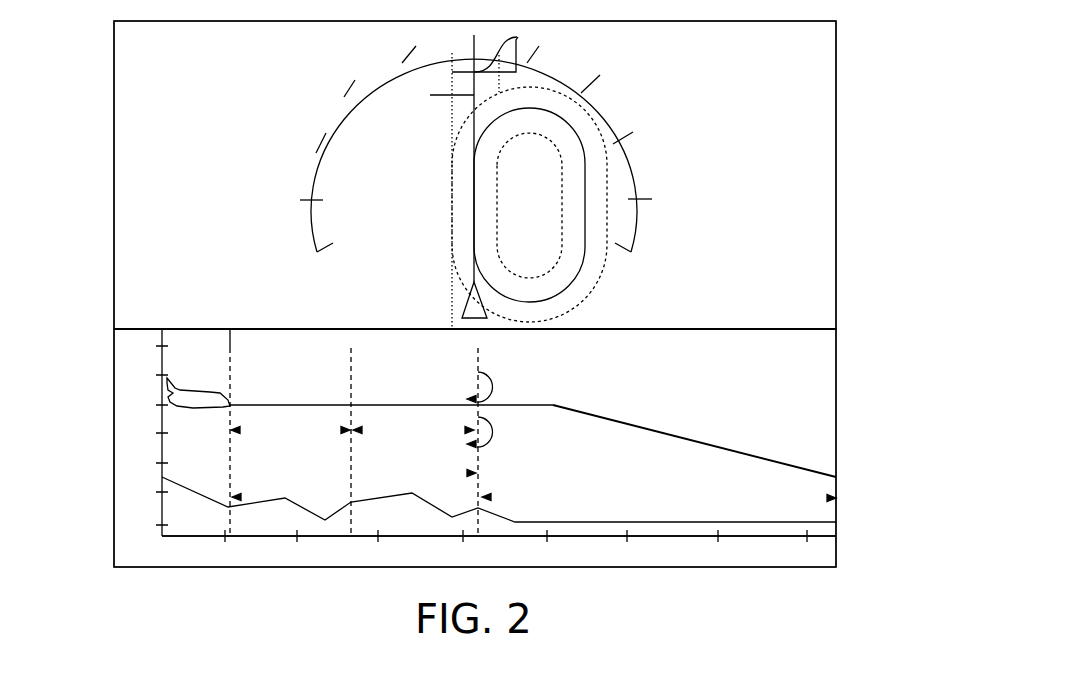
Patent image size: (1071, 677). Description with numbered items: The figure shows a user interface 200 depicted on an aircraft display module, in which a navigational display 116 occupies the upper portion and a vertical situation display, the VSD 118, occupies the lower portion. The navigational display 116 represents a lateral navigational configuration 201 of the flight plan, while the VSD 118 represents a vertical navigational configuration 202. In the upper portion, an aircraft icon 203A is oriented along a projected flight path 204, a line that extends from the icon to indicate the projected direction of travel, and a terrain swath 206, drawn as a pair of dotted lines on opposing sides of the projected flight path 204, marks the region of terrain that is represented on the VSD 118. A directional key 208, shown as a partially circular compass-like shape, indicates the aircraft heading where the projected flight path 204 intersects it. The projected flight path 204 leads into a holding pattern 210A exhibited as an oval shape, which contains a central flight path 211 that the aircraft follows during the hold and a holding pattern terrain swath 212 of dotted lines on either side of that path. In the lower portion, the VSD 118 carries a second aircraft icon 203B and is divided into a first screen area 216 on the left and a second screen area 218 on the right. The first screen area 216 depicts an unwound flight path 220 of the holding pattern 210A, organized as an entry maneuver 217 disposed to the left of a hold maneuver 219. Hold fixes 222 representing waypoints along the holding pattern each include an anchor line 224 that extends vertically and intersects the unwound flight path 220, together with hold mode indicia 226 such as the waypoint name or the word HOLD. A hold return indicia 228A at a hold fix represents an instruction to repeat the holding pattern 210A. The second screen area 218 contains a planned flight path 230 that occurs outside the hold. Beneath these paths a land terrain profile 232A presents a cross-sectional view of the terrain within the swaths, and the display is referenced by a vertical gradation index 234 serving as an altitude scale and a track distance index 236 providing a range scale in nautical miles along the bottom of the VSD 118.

The user interface 200 is at (97, 83).
The navigational display 116 is at (849, 116).
The VSD 118 is at (849, 372).
The lateral navigational configuration 201 is at (475, 242).
The vertical navigational configuration 202 is at (499, 449).
The projected flight path 204 is at (432, 95).
The terrain swath 206 is at (518, 37).
The directional key 208 is at (565, 75).
The holding pattern 210A is at (611, 129).
The central flight path 211 is at (608, 243).
The holding pattern terrain swath 212 is at (607, 273).
The aircraft icon 203A is at (465, 303).
The aircraft icon 203B is at (210, 390).
The first screen area 216 is at (469, 473).
The entry maneuver 217 is at (343, 430).
The second screen area 218 is at (828, 498).
The hold maneuver 219 is at (467, 430).
The unwound flight path 220 is at (284, 405).
The hold fix 222 is at (248, 310).
The anchor line 224 is at (228, 463).
The hold mode indicia 226 is at (230, 328).
The hold return indicia 228A is at (495, 432).
The planned flight path 230 is at (659, 432).
The land terrain profile 232A is at (499, 502).
The vertical gradation index 234 is at (128, 512).
The track distance index 236 is at (622, 572).